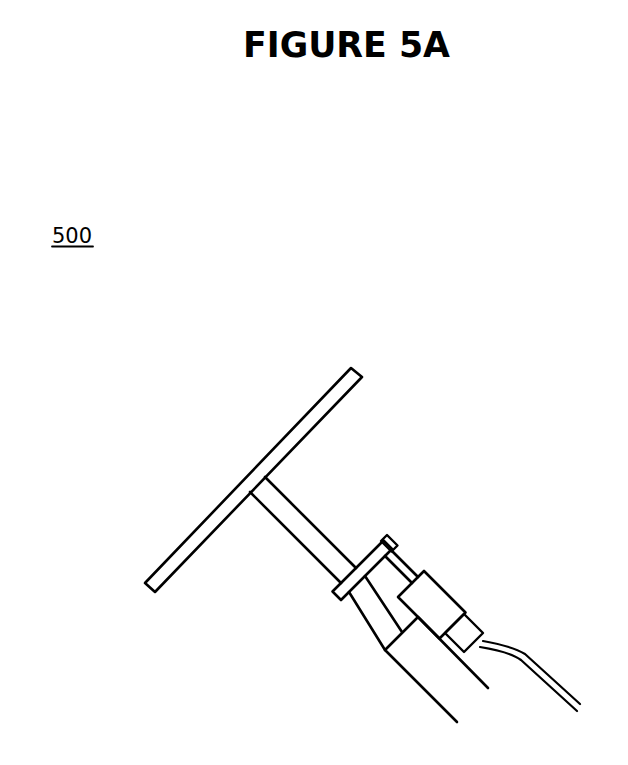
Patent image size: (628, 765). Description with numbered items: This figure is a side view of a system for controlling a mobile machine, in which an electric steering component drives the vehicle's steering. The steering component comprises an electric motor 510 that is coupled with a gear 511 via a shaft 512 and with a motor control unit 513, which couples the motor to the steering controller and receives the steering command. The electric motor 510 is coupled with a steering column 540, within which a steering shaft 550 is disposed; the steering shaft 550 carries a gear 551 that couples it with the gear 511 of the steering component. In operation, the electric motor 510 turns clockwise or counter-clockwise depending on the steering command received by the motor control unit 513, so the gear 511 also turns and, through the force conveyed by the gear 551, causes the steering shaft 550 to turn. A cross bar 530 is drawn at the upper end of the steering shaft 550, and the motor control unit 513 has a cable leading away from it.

The electric motor 510 is at (445, 600).
The gear 511 is at (385, 534).
The shaft 512 is at (408, 564).
The motor control unit 513 is at (476, 640).
The cross bar 530 is at (228, 505).
The steering column 540 is at (438, 675).
The steering shaft 550 is at (333, 592).
The gear 551 is at (365, 602).